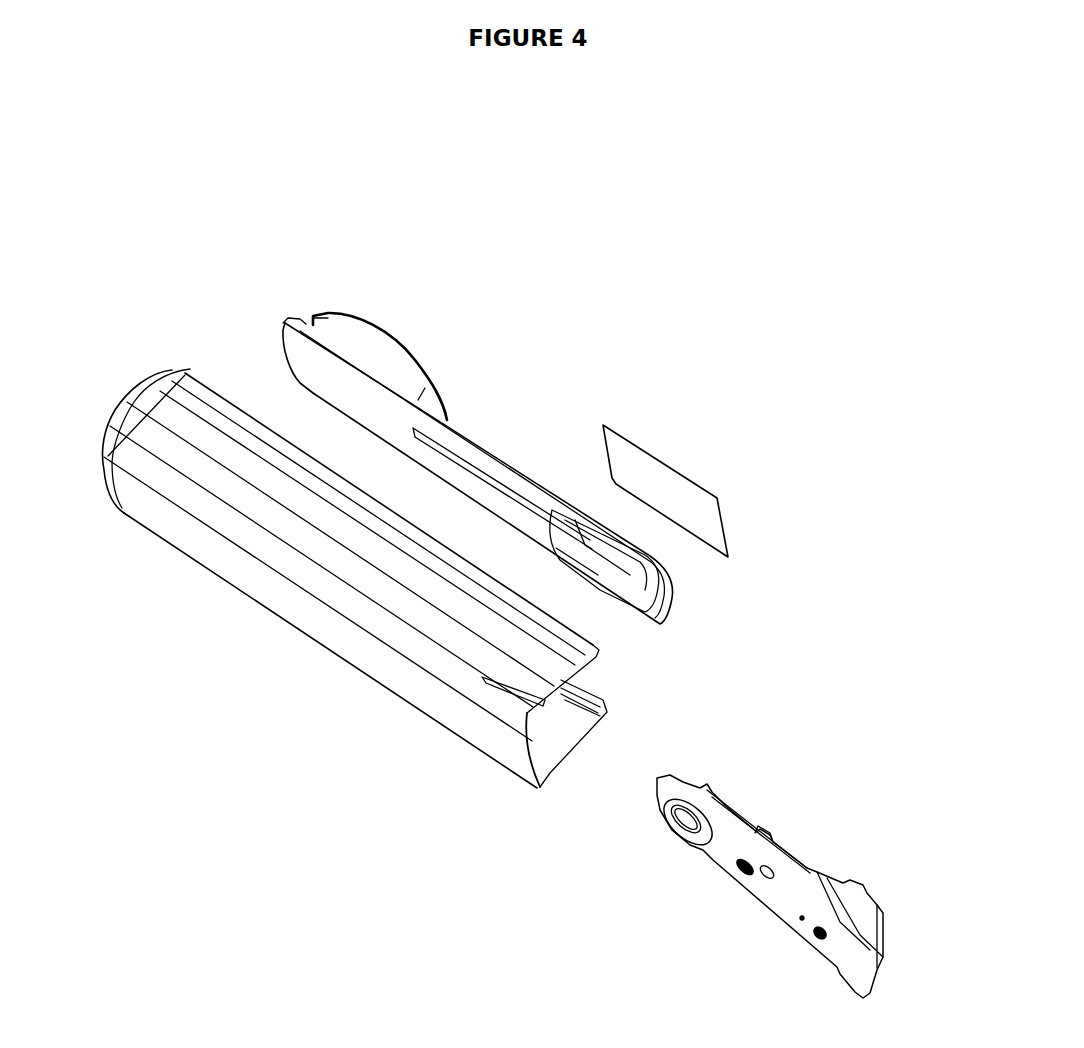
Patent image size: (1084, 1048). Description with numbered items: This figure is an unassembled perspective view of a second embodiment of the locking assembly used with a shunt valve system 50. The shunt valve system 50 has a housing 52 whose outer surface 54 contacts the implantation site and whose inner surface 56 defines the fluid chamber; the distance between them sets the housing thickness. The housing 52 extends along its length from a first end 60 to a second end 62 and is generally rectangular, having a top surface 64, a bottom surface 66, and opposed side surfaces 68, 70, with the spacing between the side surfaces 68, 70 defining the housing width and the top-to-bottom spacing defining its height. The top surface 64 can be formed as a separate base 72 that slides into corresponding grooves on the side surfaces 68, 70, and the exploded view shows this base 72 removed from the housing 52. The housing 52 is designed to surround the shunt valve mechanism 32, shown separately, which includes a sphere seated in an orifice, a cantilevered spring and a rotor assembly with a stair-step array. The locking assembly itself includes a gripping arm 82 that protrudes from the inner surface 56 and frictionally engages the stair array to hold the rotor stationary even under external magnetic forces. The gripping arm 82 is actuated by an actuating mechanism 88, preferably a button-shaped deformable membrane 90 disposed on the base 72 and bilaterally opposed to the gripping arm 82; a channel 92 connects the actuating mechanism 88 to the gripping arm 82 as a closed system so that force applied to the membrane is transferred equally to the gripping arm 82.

The shunt valve mechanism 32 is at (810, 832).
The shunt valve system 50 is at (163, 262).
The housing 52 is at (293, 630).
The outer surface 54 is at (488, 733).
The inner surface 56 is at (582, 672).
The first end 60 is at (136, 401).
The second end 62 is at (565, 773).
The top surface 64 is at (212, 388).
The bottom surface 66 is at (388, 655).
The side surface 68 is at (232, 455).
The side surface 70 is at (585, 735).
The base 72 is at (493, 448).
The gripping arm 82 is at (597, 577).
The actuating mechanism 88 is at (410, 318).
The deformable membrane 90 is at (418, 355).
The channel 92 is at (506, 494).